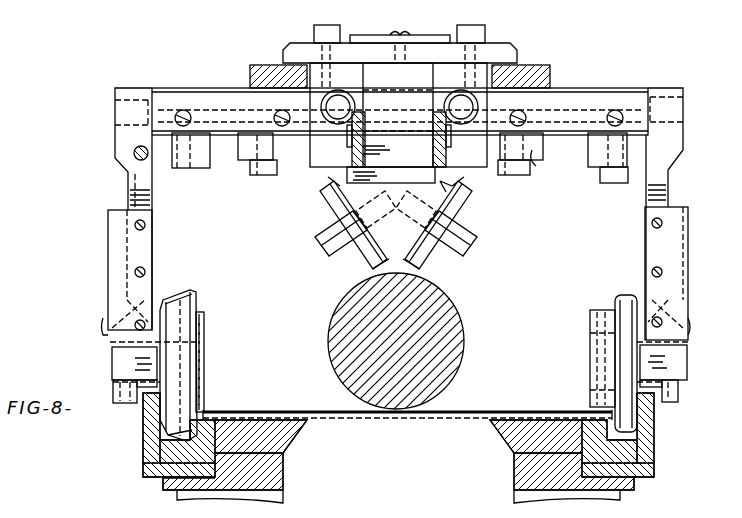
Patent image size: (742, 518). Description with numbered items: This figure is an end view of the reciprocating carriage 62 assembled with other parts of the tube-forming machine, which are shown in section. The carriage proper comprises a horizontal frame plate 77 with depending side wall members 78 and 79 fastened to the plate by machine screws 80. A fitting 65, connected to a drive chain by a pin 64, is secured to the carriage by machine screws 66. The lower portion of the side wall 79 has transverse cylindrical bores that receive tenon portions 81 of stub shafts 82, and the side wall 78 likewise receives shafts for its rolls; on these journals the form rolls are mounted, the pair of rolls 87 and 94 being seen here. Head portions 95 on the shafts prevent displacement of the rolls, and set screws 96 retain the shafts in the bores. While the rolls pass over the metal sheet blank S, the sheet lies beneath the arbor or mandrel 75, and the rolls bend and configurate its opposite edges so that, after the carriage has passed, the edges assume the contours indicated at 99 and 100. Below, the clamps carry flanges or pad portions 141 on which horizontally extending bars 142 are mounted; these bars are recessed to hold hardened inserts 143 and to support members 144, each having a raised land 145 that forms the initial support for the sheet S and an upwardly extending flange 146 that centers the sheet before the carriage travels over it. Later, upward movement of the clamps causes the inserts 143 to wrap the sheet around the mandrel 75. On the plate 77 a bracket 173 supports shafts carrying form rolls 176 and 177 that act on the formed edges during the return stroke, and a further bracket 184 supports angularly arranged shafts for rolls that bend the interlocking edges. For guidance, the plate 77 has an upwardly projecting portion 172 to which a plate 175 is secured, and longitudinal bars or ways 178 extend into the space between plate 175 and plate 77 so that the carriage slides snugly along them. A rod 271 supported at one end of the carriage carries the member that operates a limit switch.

The carriage 62 is at (679, 190).
The pin 64 is at (448, 143).
The fitting 65 is at (410, 112).
The machine screws 66 is at (478, 104).
The arbor or mandrel 75 is at (455, 316).
The horizontal frame plate 77 is at (556, 88).
The side wall member 78 is at (685, 139).
The side wall member 79 is at (117, 147).
The machine screws 80 is at (140, 100).
The tenon portions 81 is at (111, 354).
The stub shafts 82 is at (178, 338).
The roll 87 is at (608, 310).
The roll 94 is at (186, 303).
The head portions 95 is at (205, 339).
The set screws 96 is at (113, 392).
The edge contour 99 is at (183, 432).
The edge contour 100 is at (644, 479).
The flanges or pad portions 141 is at (283, 494).
The horizontally extending bars 142 is at (284, 471).
The hardened inserts 143 is at (298, 434).
The members 144 is at (145, 457).
The raised portion or land 145 is at (212, 412).
The upwardly extending flange 146 is at (146, 418).
The upwardly projecting portion 172 is at (527, 66).
The bracket 173 is at (437, 186).
The plate 175 is at (505, 44).
The form roll 176 is at (368, 258).
The form roll 177 is at (417, 260).
The bars or ways 178 is at (252, 76).
The bracket 184 is at (533, 160).
The rod 271 is at (133, 158).
The sheet blank S is at (480, 398).